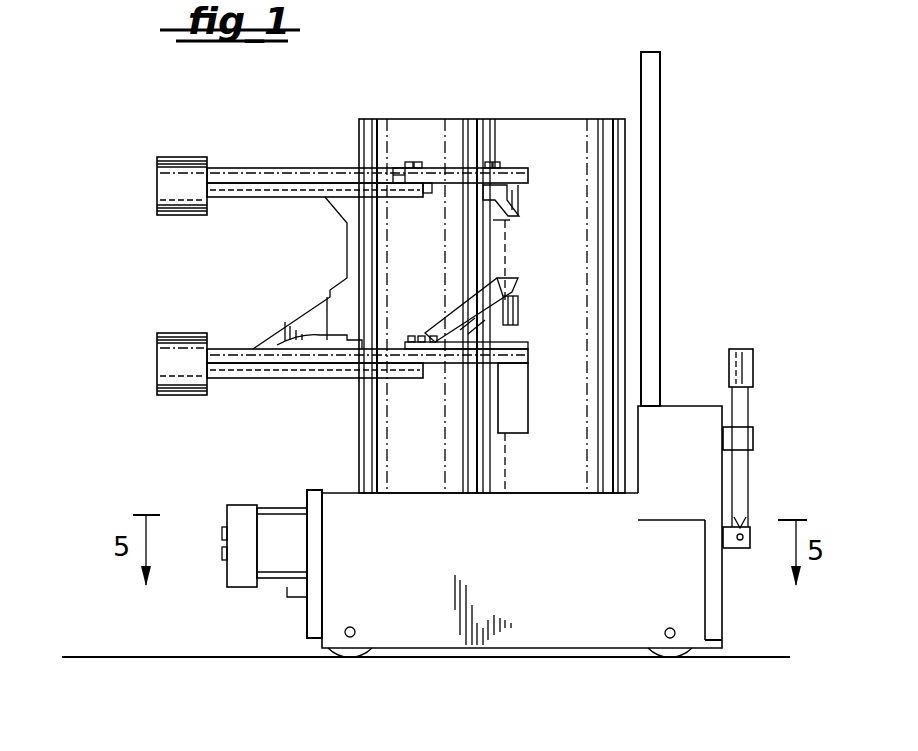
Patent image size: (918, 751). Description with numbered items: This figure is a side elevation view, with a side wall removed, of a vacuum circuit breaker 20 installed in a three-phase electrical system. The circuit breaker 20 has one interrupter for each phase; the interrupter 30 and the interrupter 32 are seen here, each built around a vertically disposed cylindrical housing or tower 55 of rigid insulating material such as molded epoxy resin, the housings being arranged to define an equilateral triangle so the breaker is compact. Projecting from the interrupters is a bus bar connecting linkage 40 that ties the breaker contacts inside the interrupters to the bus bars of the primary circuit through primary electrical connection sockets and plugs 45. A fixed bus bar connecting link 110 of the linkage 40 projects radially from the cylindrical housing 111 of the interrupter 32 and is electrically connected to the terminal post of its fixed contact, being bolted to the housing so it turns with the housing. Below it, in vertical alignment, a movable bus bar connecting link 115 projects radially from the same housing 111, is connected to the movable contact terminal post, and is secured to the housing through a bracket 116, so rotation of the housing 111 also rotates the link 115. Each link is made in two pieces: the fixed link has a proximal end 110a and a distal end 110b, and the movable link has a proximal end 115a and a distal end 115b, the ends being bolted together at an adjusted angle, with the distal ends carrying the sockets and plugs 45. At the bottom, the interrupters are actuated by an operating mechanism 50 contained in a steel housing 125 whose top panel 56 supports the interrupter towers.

The circuit breaker 20 is at (736, 155).
The interrupter 30 is at (393, 113).
The interrupter 32 is at (580, 113).
The bus bar connecting linkage 40 is at (122, 328).
The primary electrical connection sockets and plugs 45 is at (180, 216).
The operating mechanism 50 is at (566, 603).
The cylindrical housing or tower 55 is at (430, 478).
The top panel 56 is at (340, 493).
The fixed bus bar connecting link 110 is at (313, 168).
The proximal end 110a is at (436, 166).
The distal end 110b is at (230, 168).
The cylindrical housing 111 is at (556, 478).
The movable bus bar connecting link 115 is at (328, 378).
The proximal end 115a is at (440, 364).
The distal end 115b is at (237, 349).
The bracket 116 is at (455, 332).
The housing 125 is at (328, 614).